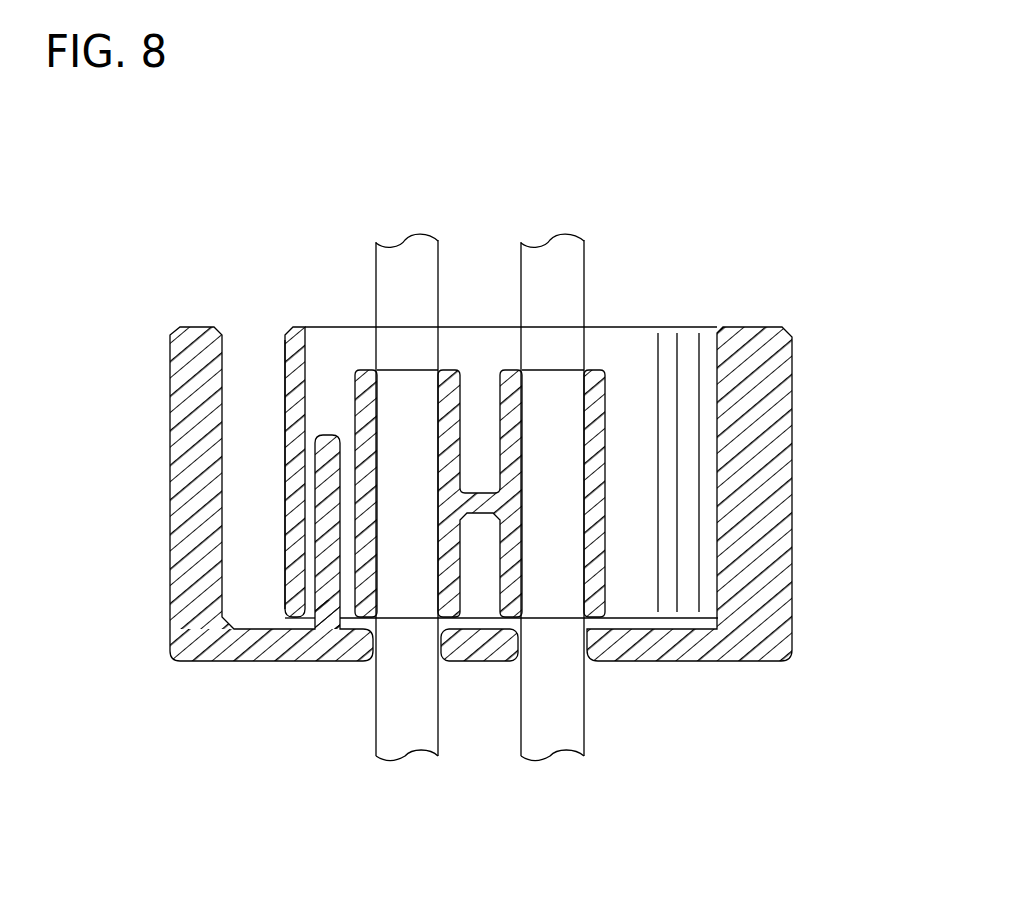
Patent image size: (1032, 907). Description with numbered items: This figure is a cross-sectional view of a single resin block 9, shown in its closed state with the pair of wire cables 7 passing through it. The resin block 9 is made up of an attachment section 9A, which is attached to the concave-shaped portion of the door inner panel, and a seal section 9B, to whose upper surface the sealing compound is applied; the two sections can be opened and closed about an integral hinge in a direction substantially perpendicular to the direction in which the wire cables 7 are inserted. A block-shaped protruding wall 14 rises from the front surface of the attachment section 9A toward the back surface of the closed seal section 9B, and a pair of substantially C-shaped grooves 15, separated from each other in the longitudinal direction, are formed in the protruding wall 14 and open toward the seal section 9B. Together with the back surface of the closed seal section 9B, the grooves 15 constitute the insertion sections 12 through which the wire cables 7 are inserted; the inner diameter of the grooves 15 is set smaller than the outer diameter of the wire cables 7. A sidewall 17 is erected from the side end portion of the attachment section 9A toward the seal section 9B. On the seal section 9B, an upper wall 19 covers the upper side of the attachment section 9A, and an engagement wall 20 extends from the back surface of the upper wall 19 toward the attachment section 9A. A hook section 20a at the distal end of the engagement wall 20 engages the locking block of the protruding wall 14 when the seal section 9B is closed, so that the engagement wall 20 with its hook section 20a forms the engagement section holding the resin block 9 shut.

The wire cables 7 is at (392, 748).
The resin block 9 is at (802, 350).
The attachment section 9A is at (305, 327).
The seal section 9B is at (235, 648).
The insertion sections 12 is at (513, 472).
The protruding wall 14 is at (598, 578).
The substantially C-shaped grooves 15 is at (513, 472).
The sidewall 17 is at (292, 458).
The upper wall 19 is at (178, 392).
The engagement wall 20 is at (325, 550).
The hook section 20a is at (342, 587).